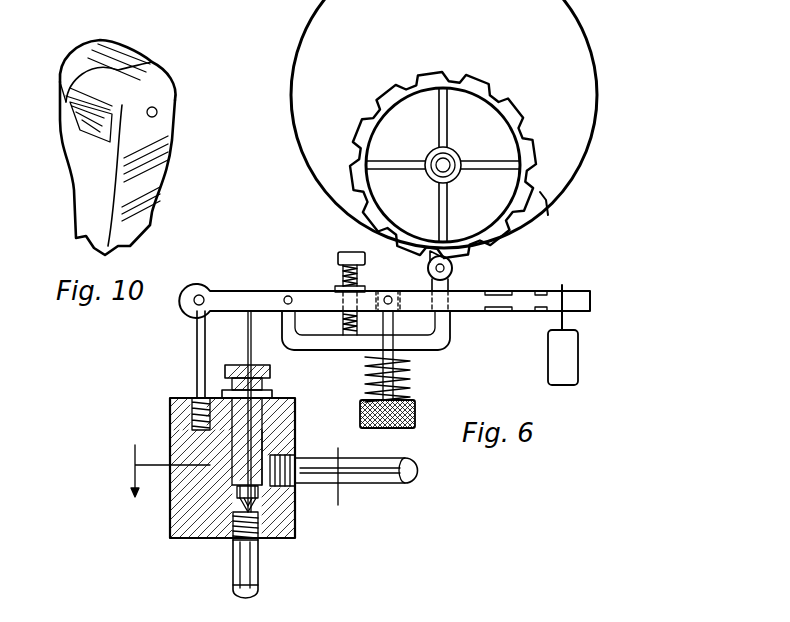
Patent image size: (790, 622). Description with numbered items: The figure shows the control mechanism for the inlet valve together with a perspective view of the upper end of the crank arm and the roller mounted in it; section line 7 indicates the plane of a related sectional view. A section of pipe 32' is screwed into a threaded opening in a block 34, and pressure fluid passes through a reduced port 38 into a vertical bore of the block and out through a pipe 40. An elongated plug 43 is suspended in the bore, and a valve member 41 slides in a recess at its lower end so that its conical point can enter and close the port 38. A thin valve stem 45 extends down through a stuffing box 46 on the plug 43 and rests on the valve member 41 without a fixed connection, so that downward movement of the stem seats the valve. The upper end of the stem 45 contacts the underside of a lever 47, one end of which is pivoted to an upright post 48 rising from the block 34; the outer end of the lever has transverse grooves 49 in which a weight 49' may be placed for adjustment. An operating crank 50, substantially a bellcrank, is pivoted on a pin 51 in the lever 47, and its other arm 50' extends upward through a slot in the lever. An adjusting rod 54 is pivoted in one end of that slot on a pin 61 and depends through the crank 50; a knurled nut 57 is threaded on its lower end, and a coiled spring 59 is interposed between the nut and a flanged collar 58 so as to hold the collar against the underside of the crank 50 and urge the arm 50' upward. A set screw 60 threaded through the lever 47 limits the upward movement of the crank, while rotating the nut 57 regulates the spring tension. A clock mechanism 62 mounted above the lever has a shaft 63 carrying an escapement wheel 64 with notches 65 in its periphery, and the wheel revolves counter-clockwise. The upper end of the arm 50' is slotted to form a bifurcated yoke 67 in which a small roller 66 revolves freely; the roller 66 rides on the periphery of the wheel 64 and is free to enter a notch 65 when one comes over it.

In FIG. 6, the section line 7- 7 is at (228, 478).
In FIG. 6, the pipe section 32' is at (225, 555).
In FIG. 6, the block 34 is at (172, 526).
In FIG. 6, the reduced port 38 is at (248, 512).
In FIG. 6, the pipe 40 is at (392, 468).
In FIG. 6, the valve member 41 is at (258, 490).
In FIG. 6, the plug 43 is at (293, 430).
In FIG. 6, the valve stem 45 is at (249, 352).
In FIG. 6, the stuffing box 46 is at (270, 372).
In FIG. 6, the lever 47 is at (266, 268).
In FIG. 6, the upright post 48 is at (200, 360).
In FIG. 6, the transverse grooves 49 is at (541, 297).
In FIG. 6, the weight 49' is at (590, 357).
In FIG. 6, the operating crank 50 is at (366, 347).
In FIG. 10, the arm of the crank 50' is at (96, 168).
In FIG. 6, the arm of the crank 50' is at (469, 289).
In FIG. 6, the pin 51 is at (289, 296).
In FIG. 6, the adjusting rod 54 is at (432, 323).
In FIG. 6, the knurled nut 57 is at (416, 416).
In FIG. 6, the flanged collar 58 is at (412, 373).
In FIG. 6, the coiled spring 59 is at (418, 393).
In FIG. 6, the set screw 60 is at (350, 252).
In FIG. 6, the pin 61 is at (389, 297).
In FIG. 6, the clock mechanism 62 is at (567, 62).
In FIG. 6, the shaft 63 is at (447, 160).
In FIG. 6, the escapement wheel 64 is at (392, 93).
In FIG. 6, the notches 65 is at (544, 188).
In FIG. 10, the roller 66 is at (118, 54).
In FIG. 6, the roller 66 is at (458, 282).
In FIG. 10, the bifurcated yoke 67 is at (158, 124).